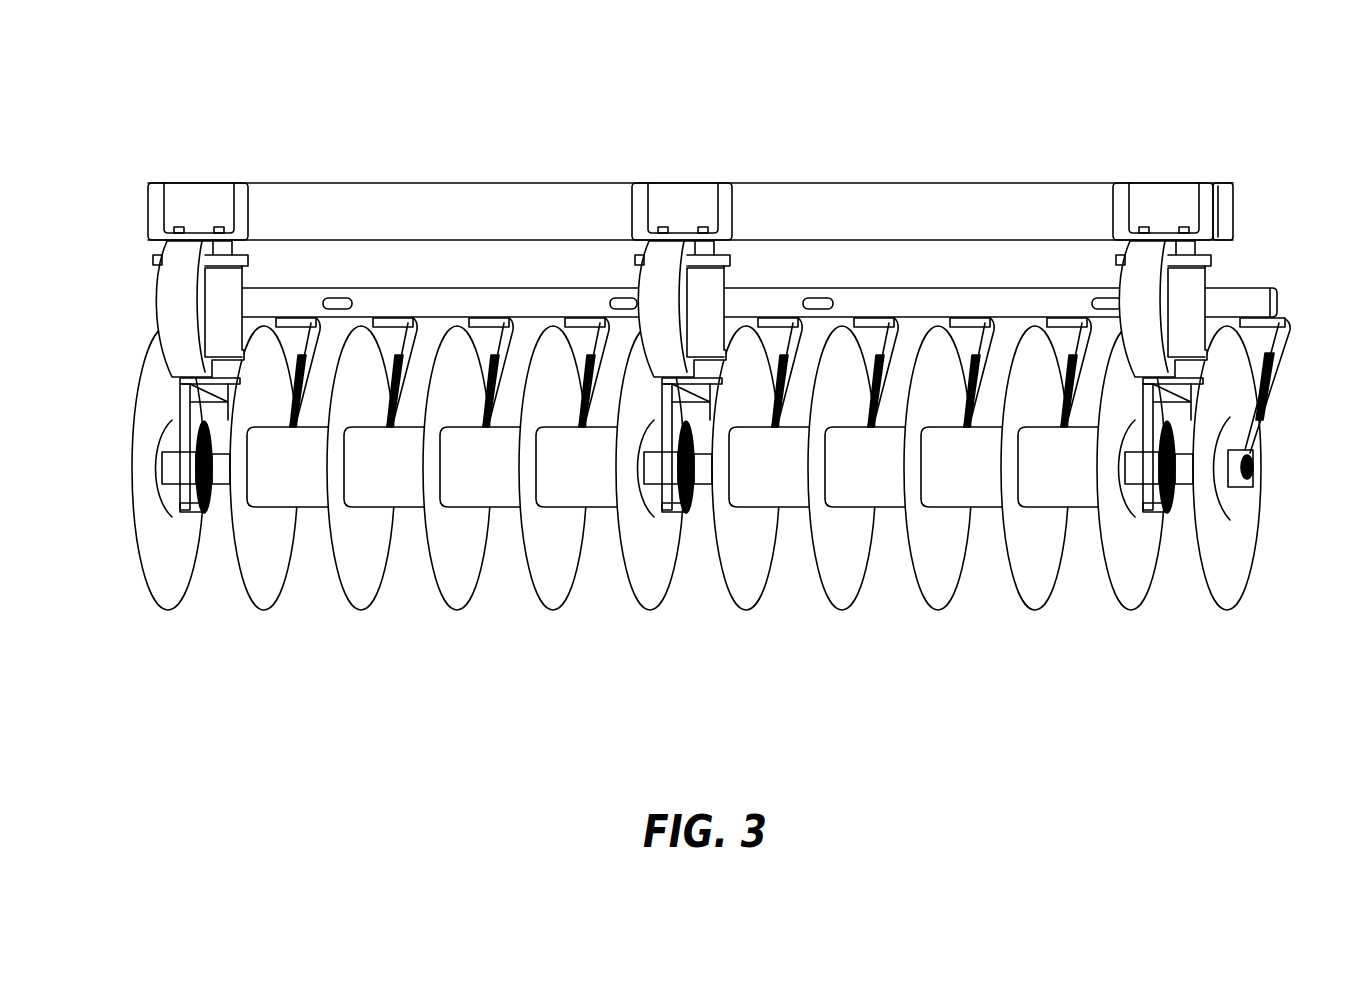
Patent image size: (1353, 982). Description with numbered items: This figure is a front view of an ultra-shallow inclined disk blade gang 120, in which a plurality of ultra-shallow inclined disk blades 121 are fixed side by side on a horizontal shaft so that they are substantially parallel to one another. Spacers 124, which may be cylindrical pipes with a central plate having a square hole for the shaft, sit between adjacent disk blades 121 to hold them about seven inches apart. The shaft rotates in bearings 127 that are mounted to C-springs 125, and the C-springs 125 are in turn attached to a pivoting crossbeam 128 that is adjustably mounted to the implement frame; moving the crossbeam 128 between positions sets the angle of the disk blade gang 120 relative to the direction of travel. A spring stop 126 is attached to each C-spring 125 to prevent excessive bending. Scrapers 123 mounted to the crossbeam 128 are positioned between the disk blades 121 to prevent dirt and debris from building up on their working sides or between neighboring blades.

The ultra-shallow inclined disk blade gang 120 is at (732, 408).
The ultra-shallow inclined disk blade 121 is at (743, 568).
The scraper 123 is at (1260, 438).
The spacer 124 is at (1078, 497).
The C-spring 125 is at (1130, 217).
The spring stop 126 is at (1183, 316).
The bearing 127 is at (1165, 520).
The crossbeam 128 is at (488, 183).